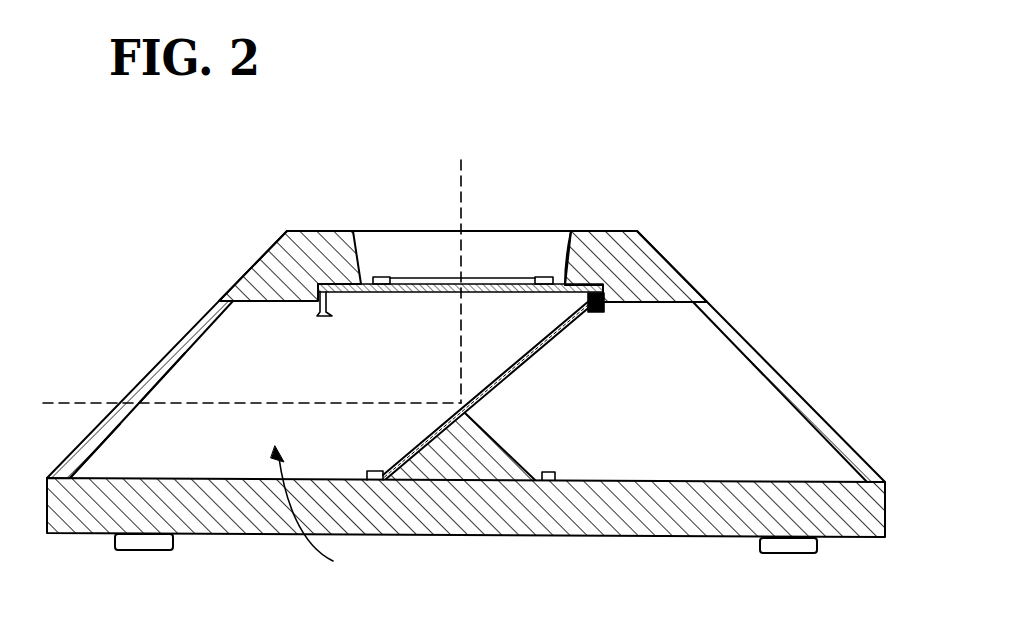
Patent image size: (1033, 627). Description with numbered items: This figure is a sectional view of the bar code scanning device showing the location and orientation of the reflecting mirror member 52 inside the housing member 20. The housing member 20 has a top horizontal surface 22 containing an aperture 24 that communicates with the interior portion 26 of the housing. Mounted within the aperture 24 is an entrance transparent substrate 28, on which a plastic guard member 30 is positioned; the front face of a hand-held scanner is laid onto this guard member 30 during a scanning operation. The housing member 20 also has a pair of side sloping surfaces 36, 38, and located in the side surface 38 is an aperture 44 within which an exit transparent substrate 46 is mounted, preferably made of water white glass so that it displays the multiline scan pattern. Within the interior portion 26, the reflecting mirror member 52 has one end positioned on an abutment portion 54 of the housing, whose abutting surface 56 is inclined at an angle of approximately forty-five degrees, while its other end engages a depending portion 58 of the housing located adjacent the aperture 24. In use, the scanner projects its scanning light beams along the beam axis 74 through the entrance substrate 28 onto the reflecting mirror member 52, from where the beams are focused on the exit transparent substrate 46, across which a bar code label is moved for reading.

The housing member 20 is at (583, 537).
The top horizontal surface 22 is at (293, 228).
The aperture 24 is at (567, 265).
The interior portion 26 is at (320, 512).
The entrance transparent substrate 28 is at (385, 292).
The plastic guard member 30 is at (382, 277).
The side sloping surface 36 is at (677, 268).
The side sloping surface 38 is at (243, 275).
The aperture 44 is at (82, 452).
The exit transparent substrate 46 is at (167, 350).
The reflecting mirror member 52 is at (553, 342).
The abutment portion 54 is at (503, 447).
The abutting surface 56 is at (423, 447).
The depending portion 58 is at (606, 306).
The beam axis 74 is at (460, 213).